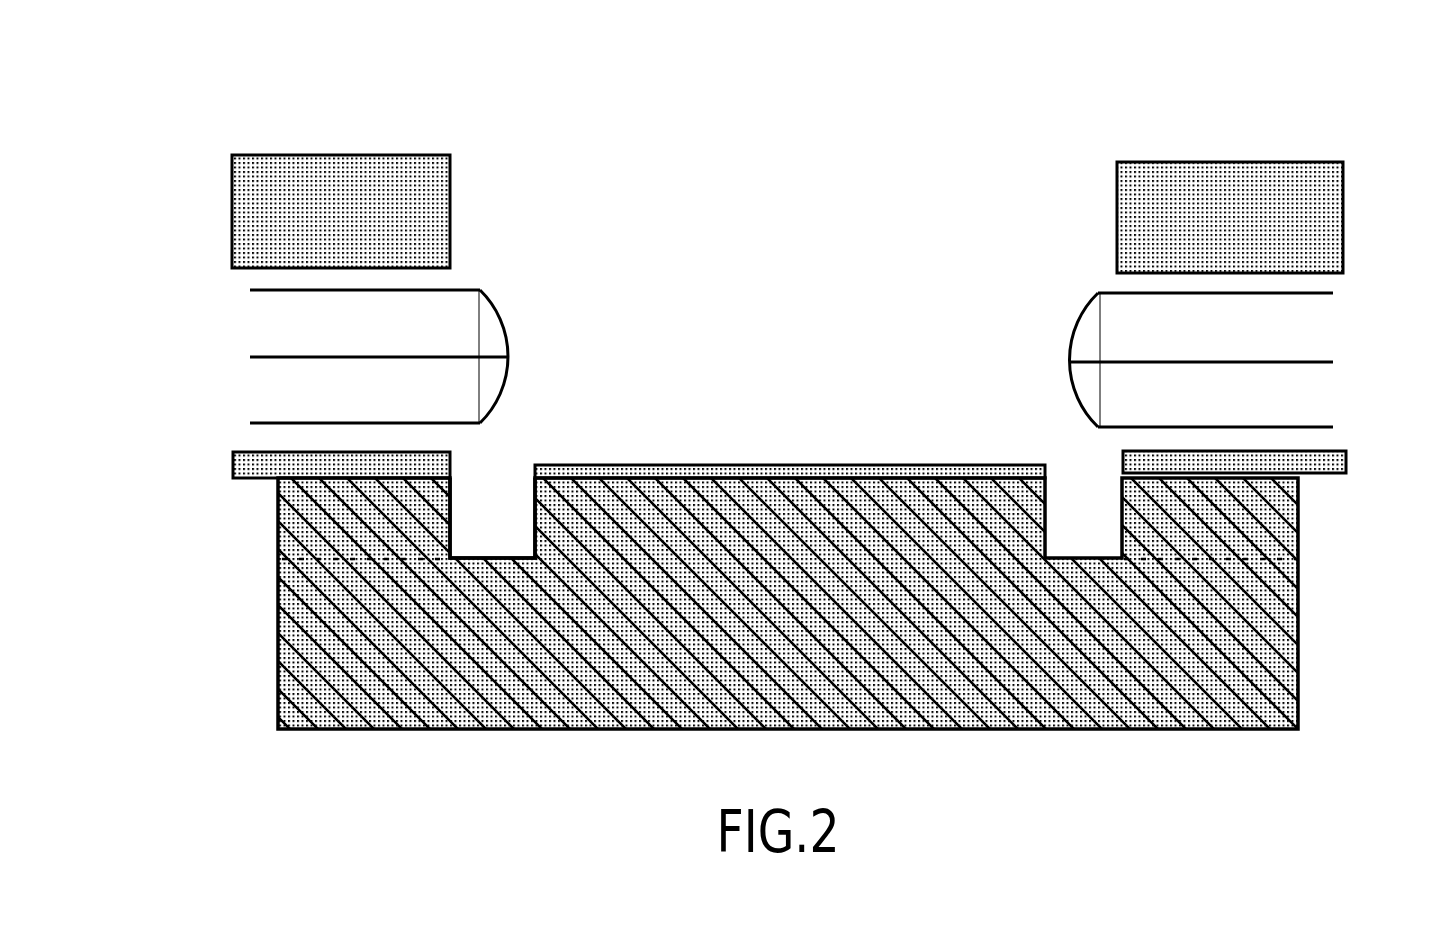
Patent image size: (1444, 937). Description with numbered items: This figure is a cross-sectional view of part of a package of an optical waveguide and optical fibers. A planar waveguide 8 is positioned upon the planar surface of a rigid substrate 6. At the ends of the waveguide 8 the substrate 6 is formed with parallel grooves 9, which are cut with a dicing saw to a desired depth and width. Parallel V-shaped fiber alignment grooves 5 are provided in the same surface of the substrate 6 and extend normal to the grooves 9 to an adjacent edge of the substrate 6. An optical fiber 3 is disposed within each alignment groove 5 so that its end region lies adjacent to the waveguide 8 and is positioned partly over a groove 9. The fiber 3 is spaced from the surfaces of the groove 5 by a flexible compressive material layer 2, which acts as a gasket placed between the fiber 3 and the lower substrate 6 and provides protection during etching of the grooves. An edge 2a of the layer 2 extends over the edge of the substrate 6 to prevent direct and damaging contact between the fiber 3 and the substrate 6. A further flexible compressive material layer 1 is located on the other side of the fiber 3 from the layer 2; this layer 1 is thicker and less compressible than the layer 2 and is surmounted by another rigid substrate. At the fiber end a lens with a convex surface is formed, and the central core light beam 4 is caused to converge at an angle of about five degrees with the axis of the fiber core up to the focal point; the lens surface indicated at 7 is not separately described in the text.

The flexible compressive material layer 1 is at (477, 141).
The flexible compressive material layer 2 is at (347, 451).
The edge of the compressive layer 2a is at (1352, 494).
The optical fiber 3 is at (484, 264).
The light beam 4 is at (526, 339).
The fiber alignment groove 5 is at (333, 520).
The rigid substrate 6 is at (310, 607).
The lens end face 7 is at (518, 284).
The planar waveguide 8 is at (869, 445).
The groove 9 is at (506, 495).